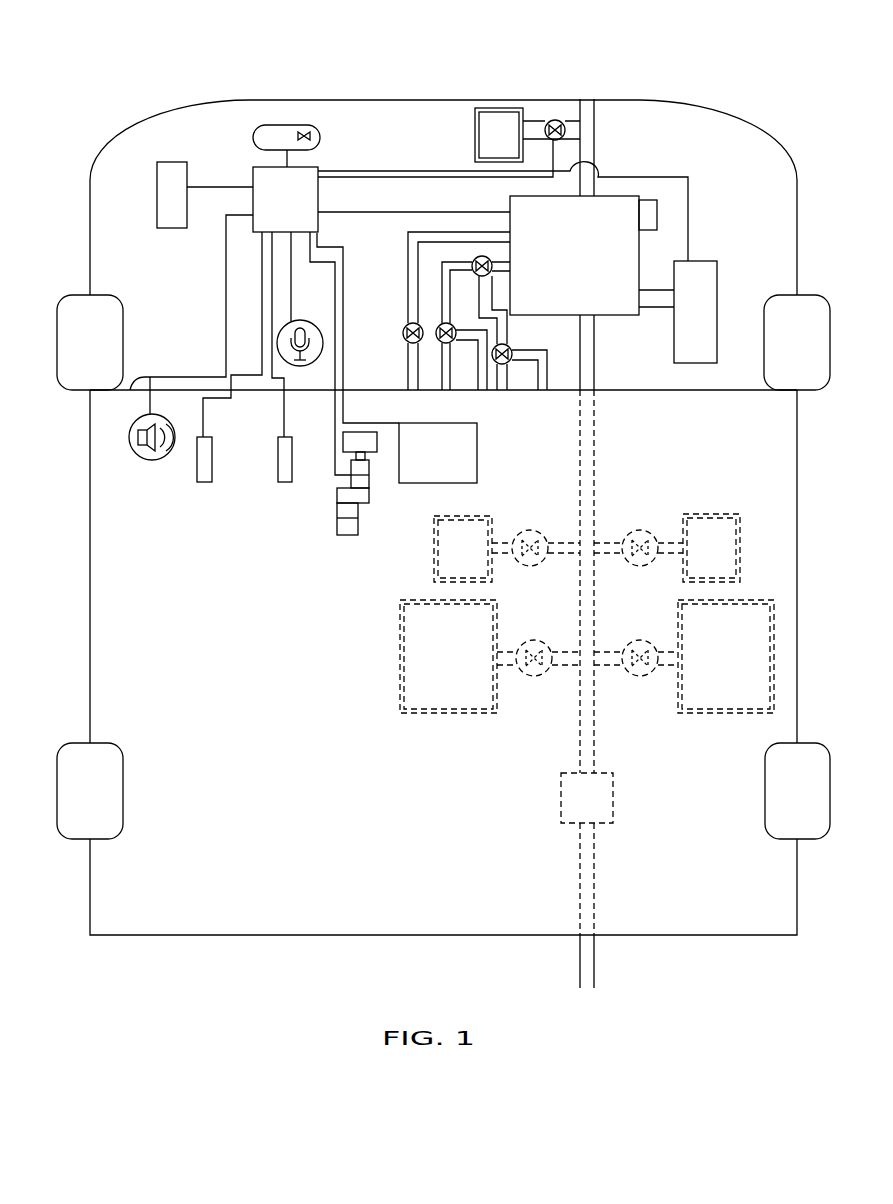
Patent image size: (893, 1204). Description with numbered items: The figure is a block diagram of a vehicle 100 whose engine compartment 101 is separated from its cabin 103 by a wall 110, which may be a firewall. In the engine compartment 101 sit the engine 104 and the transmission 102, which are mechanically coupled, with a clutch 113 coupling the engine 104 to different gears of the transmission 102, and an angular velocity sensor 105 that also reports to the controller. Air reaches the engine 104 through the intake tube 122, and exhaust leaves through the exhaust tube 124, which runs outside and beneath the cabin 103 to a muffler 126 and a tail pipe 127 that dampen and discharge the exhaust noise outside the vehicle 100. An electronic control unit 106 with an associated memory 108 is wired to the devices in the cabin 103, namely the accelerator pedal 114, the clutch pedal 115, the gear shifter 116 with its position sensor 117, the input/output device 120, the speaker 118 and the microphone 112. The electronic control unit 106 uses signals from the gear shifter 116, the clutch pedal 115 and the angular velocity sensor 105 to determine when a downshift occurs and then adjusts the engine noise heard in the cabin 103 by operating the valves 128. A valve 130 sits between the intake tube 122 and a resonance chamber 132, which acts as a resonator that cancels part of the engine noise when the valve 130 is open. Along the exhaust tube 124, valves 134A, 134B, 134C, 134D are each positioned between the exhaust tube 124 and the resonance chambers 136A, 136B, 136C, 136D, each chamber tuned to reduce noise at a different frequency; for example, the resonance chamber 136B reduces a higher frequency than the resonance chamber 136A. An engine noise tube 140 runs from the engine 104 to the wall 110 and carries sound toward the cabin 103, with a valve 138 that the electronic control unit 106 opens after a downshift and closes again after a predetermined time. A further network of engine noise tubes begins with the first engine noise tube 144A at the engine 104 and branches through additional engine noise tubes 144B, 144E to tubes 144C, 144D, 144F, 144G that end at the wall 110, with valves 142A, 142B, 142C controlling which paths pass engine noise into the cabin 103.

The vehicle 100 is at (92, 98).
The engine compartment 101 is at (102, 250).
The transmission 102 is at (708, 287).
The cabin 103 is at (103, 581).
The engine 104 is at (623, 196).
The angular velocity sensor 105 is at (658, 217).
The electronic control unit 106 is at (253, 177).
The memory 108 is at (155, 196).
The wall 110 is at (137, 390).
The microphone 112 is at (308, 320).
The clutch 113 is at (650, 290).
The accelerator pedal 114 is at (282, 483).
The clutch pedal 115 is at (203, 483).
The gear shifter 116 is at (363, 455).
The position sensor 117 is at (348, 535).
The speaker 118 is at (143, 460).
The input/output device 120 is at (478, 472).
The intake tube 122 is at (594, 118).
The exhaust tube 124 is at (595, 365).
The muffler 126 is at (613, 797).
The tail pipe 127 is at (596, 952).
The valves 128 is at (320, 136).
The valve 130 is at (557, 119).
The resonance chamber 132 is at (497, 108).
The valve 134A is at (533, 529).
The valve 134B is at (643, 529).
The valve 134C is at (535, 638).
The valve 134D is at (638, 638).
The resonance chamber 136A is at (432, 562).
The resonance chamber 136B is at (729, 514).
The resonance chamber 136C is at (398, 672).
The resonance chamber 136D is at (722, 713).
The valve 138 is at (403, 338).
The engine noise tube 140 is at (408, 380).
The valve 142A is at (473, 262).
The valve 142B is at (438, 328).
The valve 142C is at (511, 350).
The first engine noise tube 144A is at (497, 258).
The engine noise tube 144B is at (440, 283).
The engine noise tube 144C is at (438, 378).
The engine noise tube 144D is at (478, 376).
The engine noise tube 144E is at (488, 296).
The engine noise tube 144F is at (510, 385).
The engine noise tube 144G is at (548, 385).